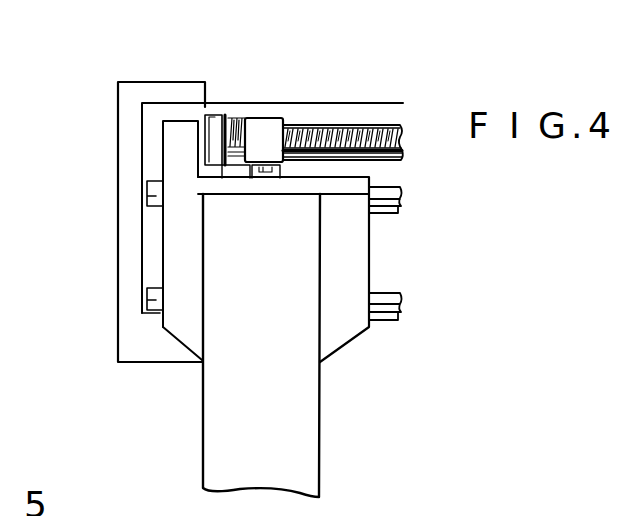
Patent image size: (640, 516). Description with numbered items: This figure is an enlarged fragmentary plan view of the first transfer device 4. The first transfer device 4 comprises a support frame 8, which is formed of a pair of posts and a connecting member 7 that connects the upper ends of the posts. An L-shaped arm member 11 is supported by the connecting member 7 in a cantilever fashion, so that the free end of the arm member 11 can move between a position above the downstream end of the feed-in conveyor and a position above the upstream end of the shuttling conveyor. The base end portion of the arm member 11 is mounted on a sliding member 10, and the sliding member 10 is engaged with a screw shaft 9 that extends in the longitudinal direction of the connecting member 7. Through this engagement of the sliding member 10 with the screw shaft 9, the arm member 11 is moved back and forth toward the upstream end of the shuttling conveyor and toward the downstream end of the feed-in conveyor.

The first transfer device 4 is at (95, 314).
The connecting member 7 is at (330, 114).
The support frame 8 is at (247, 104).
The screw shaft 9 is at (387, 134).
The sliding member 10 is at (271, 122).
The arm member 11 is at (305, 413).